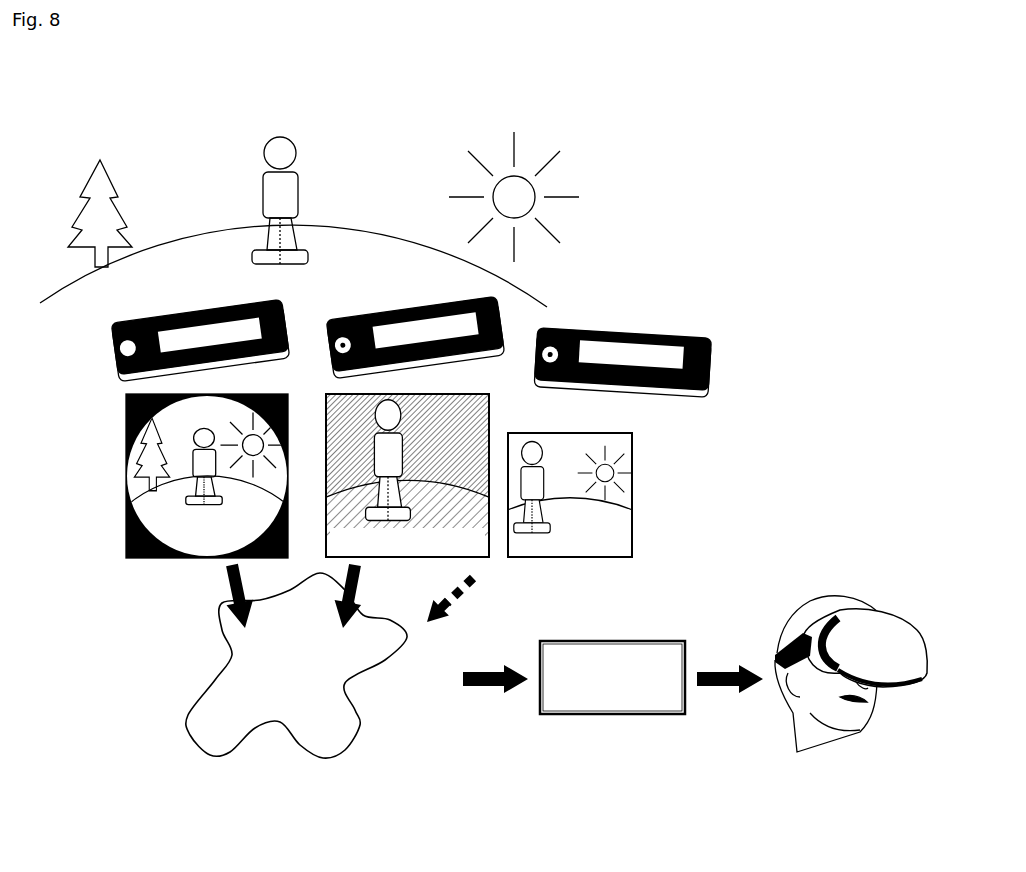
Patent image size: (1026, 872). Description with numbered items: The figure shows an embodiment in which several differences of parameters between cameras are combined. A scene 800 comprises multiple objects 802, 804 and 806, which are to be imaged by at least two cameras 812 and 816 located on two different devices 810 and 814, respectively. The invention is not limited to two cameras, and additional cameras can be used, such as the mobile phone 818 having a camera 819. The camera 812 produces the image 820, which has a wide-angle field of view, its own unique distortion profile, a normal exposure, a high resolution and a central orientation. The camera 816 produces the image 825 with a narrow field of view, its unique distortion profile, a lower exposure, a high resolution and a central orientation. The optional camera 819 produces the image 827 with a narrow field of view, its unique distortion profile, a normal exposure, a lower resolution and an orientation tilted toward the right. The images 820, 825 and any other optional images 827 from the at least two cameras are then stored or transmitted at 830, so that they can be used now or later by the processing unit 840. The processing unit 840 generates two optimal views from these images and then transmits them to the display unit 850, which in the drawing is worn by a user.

The scene 800 is at (293, 205).
The object 802 is at (118, 213).
The object 804 is at (298, 200).
The object 806 is at (514, 197).
The device 810 is at (200, 340).
The camera 812 is at (110, 355).
The device 814 is at (415, 337).
The camera 816 is at (329, 354).
The mobile phone 818 is at (622, 356).
The camera 819 is at (534, 366).
The image 820 is at (207, 476).
The image 825 is at (407, 473).
The image 827 is at (570, 495).
The storage or transmission 830 is at (329, 661).
The processing unit 840 is at (574, 677).
The display unit 850 is at (812, 674).